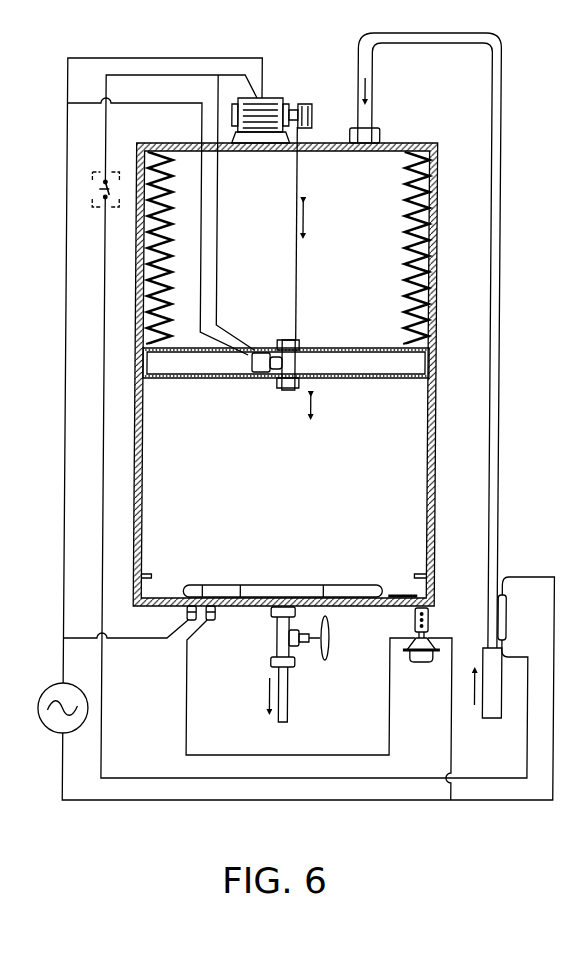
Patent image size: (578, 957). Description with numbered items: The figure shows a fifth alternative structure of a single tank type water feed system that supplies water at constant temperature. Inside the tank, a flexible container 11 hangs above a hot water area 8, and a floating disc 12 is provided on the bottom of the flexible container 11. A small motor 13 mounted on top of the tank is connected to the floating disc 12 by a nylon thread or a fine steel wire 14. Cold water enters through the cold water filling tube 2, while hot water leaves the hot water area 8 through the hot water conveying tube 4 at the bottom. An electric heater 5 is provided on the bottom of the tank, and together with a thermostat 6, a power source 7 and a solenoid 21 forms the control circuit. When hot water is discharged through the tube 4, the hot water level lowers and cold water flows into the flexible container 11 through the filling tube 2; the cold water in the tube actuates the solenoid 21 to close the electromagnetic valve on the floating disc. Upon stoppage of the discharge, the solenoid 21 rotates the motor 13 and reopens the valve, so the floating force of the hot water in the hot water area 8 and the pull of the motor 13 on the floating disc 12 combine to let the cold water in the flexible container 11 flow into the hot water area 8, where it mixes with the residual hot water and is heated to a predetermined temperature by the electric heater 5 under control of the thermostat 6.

The cold water filling tube 2 is at (503, 266).
The hot water conveying tube 4 is at (295, 677).
The electric heater 5 is at (321, 584).
The thermostat 6 is at (424, 662).
The power source 7 is at (54, 688).
The hot water area 8 is at (403, 462).
The flexible container 11 is at (428, 236).
The floating disc 12 is at (376, 380).
The small motor 13 is at (273, 97).
The fine steel wire 14 is at (300, 256).
The solenoid 21 is at (510, 608).